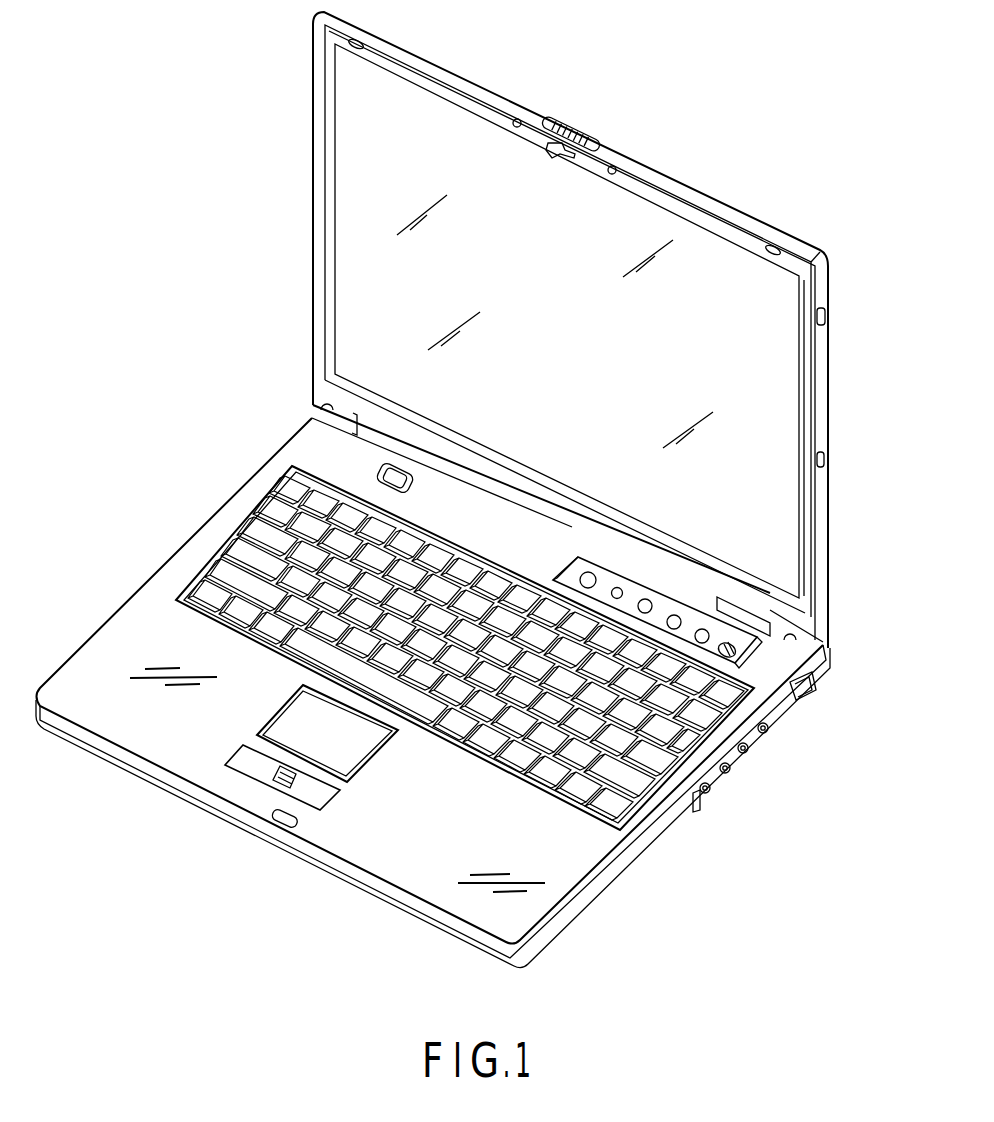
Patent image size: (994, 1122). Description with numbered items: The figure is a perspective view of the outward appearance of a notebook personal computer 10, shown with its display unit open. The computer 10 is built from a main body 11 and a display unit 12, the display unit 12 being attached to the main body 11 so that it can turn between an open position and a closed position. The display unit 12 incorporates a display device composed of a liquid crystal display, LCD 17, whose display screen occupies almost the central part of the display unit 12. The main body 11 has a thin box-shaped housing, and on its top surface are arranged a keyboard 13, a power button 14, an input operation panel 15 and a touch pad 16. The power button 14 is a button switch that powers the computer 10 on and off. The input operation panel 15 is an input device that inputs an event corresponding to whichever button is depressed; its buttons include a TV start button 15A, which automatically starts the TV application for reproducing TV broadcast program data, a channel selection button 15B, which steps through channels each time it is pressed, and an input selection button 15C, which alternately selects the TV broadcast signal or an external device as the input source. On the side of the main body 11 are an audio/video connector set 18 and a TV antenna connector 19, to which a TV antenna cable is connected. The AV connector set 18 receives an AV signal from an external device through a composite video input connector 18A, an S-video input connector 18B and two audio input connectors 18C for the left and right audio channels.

The notebook personal computer 10 is at (474, 490).
The main body 11 is at (595, 906).
The display unit 12 is at (601, 330).
The keyboard 13 is at (585, 742).
The power button 14 is at (398, 476).
The input operation panel 15 is at (711, 565).
The TV start button 15A is at (588, 572).
The channel selection button 15B is at (619, 588).
The input selection button 15C is at (650, 600).
The touch pad 16 is at (285, 736).
The liquid crystal display (LCD) 17 is at (772, 352).
The audio/video (AV) connector set 18 is at (775, 778).
The composite video input connector 18A is at (769, 730).
The S-video input connector 18B is at (731, 770).
The audio input connectors 18C is at (712, 791).
The TV antenna connector 19 is at (815, 690).